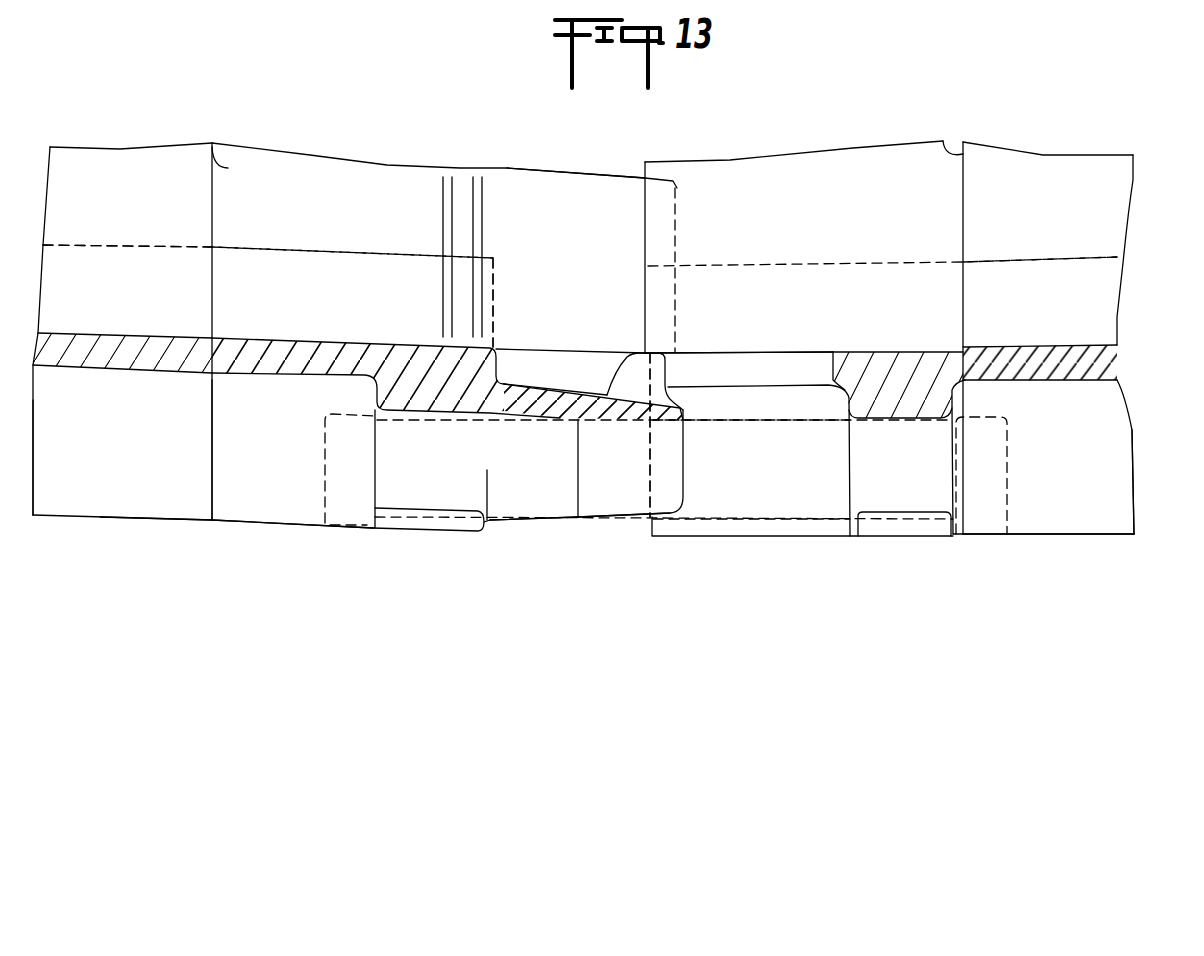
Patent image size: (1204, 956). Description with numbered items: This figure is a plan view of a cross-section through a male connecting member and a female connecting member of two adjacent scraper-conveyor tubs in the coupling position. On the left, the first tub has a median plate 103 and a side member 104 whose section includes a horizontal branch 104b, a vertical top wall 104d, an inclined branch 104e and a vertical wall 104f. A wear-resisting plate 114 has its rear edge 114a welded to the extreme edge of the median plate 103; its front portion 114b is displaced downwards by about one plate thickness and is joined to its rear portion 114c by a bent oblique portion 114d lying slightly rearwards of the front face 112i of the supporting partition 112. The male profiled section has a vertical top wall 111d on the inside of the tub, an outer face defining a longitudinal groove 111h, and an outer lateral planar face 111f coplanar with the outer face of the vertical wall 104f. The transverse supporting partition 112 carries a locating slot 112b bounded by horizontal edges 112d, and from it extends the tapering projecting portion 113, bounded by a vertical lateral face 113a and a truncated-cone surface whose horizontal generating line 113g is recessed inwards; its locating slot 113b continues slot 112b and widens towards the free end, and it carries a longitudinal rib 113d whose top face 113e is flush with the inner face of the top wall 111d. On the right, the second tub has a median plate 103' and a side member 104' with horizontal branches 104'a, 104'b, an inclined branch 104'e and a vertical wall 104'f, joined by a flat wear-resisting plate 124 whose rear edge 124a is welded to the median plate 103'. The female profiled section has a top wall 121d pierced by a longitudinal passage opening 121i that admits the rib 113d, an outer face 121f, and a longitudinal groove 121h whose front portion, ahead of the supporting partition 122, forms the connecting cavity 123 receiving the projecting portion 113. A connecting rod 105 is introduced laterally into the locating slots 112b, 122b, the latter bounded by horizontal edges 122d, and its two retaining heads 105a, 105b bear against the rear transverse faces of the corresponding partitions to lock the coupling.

The median plate 103 is at (122, 306).
The side member 104 is at (203, 380).
The horizontal branch 104b is at (118, 224).
The top wall 104d is at (108, 348).
The inclined branch 104e is at (82, 447).
The vertical wall 104f is at (147, 528).
The wear-resisting plate 114 is at (352, 163).
The rear edge 114a is at (222, 168).
The front portion 114b is at (570, 180).
The rear portion 114c is at (330, 226).
The bent oblique portion 114d is at (468, 178).
The top wall 111d is at (290, 362).
The longitudinal groove 111h is at (262, 463).
The outer terminal lateral planar face 111f is at (267, 526).
The retaining flange 105a is at (347, 505).
The supporting partition 112 is at (467, 525).
The locating slot 112b is at (400, 410).
The horizontal edge 112d is at (418, 513).
The front face 112i is at (490, 522).
The projecting portion 113 is at (546, 522).
The vertical lateral face 113a is at (622, 522).
The locating slot 113b is at (640, 486).
The rib 113d is at (585, 360).
The top face 113e is at (531, 350).
The horizontal generating line 113g is at (627, 357).
The wear-resisting plate 124 is at (856, 146).
The rear edge 124a is at (967, 112).
The longitudinal groove 121h is at (768, 417).
The longitudinal passage opening 121i is at (737, 365).
The top wall 121d is at (852, 350).
The outer terminal lateral planar face 121f is at (758, 537).
The connecting cavity 123 is at (775, 465).
The connecting rod 105 is at (728, 490).
The supporting partition 122 is at (847, 404).
The locating slot 122b is at (937, 419).
The horizontal edge 122d is at (897, 537).
The retaining flange 105b is at (985, 538).
The median plate 103' is at (1048, 216).
The side member 104' is at (1043, 390).
The horizontal branch 104'b is at (1040, 231).
The horizontal branch 104'a is at (1040, 330).
The inclined branch 104'e is at (1117, 524).
The vertical wall 104'f is at (1048, 572).